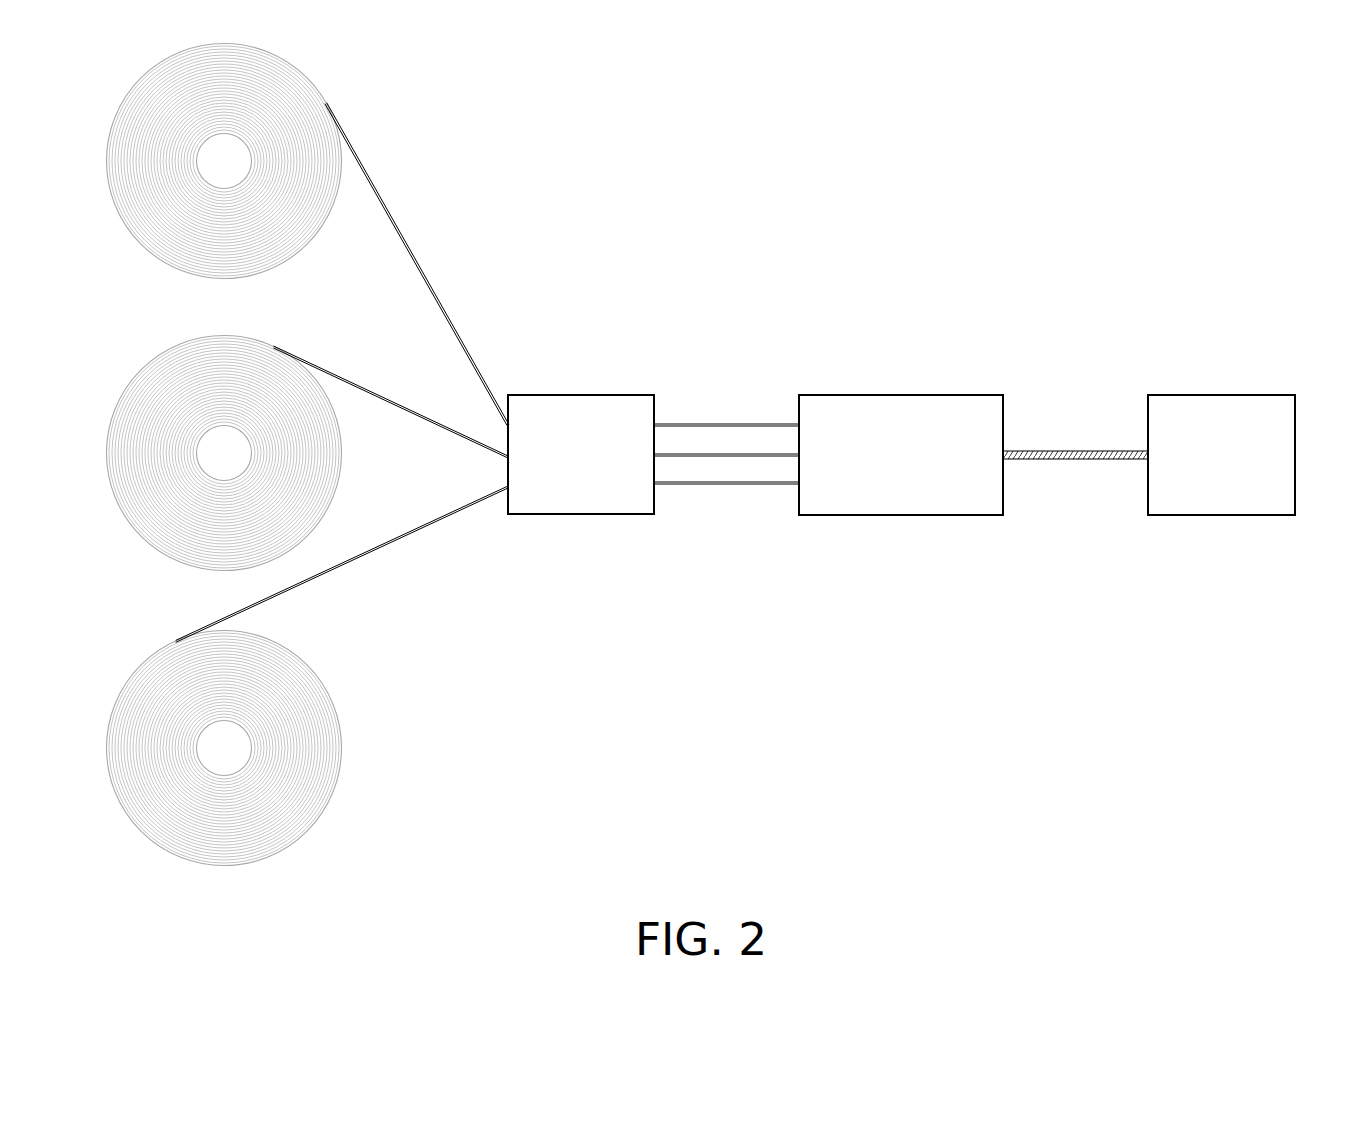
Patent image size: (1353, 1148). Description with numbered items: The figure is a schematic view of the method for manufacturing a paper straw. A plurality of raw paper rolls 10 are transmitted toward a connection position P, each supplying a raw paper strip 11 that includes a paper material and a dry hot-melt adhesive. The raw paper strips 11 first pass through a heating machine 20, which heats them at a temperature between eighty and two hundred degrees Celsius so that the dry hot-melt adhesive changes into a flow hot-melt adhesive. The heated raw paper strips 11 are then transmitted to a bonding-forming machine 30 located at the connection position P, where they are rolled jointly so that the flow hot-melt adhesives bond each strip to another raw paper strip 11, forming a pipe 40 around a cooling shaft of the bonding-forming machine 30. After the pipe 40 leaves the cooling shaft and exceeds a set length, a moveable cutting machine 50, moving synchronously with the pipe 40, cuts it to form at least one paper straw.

The raw paper roll 10 is at (295, 103).
The raw paper strip 11 is at (428, 288).
The heating machine 20 is at (582, 515).
The bonding-forming machine 30 is at (900, 515).
The pipe 40 is at (1075, 459).
The moveable cutting machine 50 is at (1222, 515).
The connection position P is at (866, 358).